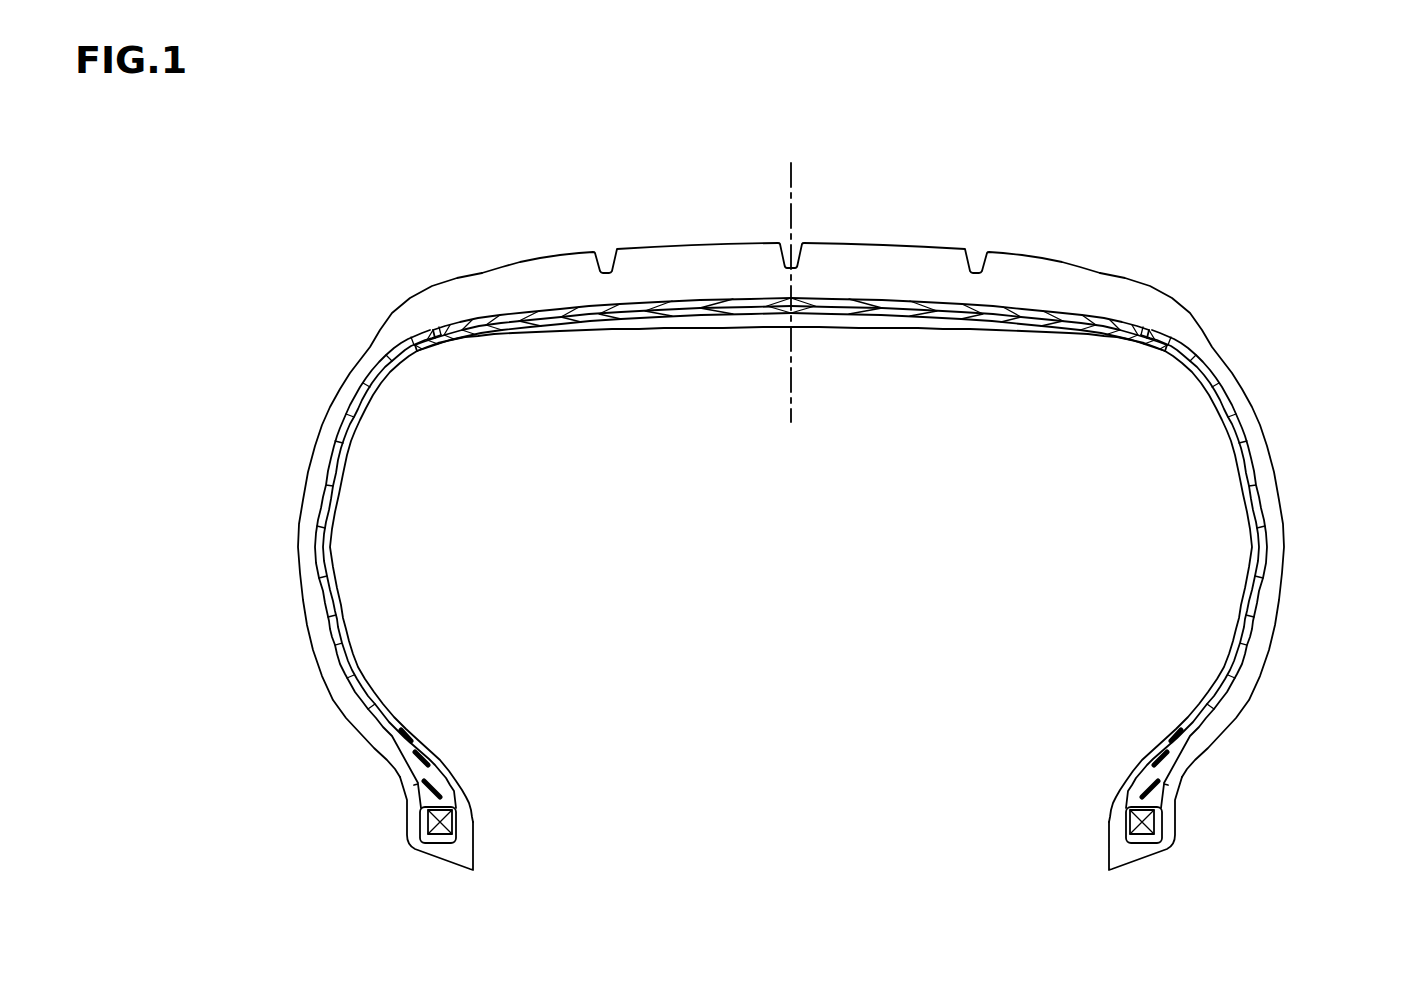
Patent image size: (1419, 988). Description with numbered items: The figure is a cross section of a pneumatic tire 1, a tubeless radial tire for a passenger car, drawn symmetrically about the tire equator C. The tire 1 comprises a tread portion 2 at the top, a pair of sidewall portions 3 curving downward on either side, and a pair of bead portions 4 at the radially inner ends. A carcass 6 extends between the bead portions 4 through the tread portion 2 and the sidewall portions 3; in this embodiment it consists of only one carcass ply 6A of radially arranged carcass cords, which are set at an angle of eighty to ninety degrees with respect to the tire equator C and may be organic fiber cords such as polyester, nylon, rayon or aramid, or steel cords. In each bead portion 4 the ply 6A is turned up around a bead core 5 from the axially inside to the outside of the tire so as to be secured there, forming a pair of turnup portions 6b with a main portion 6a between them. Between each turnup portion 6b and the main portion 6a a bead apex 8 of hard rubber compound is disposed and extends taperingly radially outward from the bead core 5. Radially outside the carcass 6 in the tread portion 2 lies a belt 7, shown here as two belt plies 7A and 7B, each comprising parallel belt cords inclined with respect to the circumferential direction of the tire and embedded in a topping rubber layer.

The pneumatic tire 1 is at (1132, 232).
The tread portion 2 is at (900, 228).
The sidewall portions 3 is at (278, 508).
The bead portions 4 is at (393, 810).
The bead core 5 is at (450, 825).
The carcass 6 is at (791, 574).
The carcass ply 6A is at (1120, 563).
The main portion 6a is at (1263, 573).
The turnup portions 6b is at (1180, 792).
The belt 7 is at (946, 492).
The belt ply 7A is at (850, 305).
The belt ply 7B is at (885, 302).
The bead apex 8 is at (437, 753).
The tire equator C is at (790, 277).